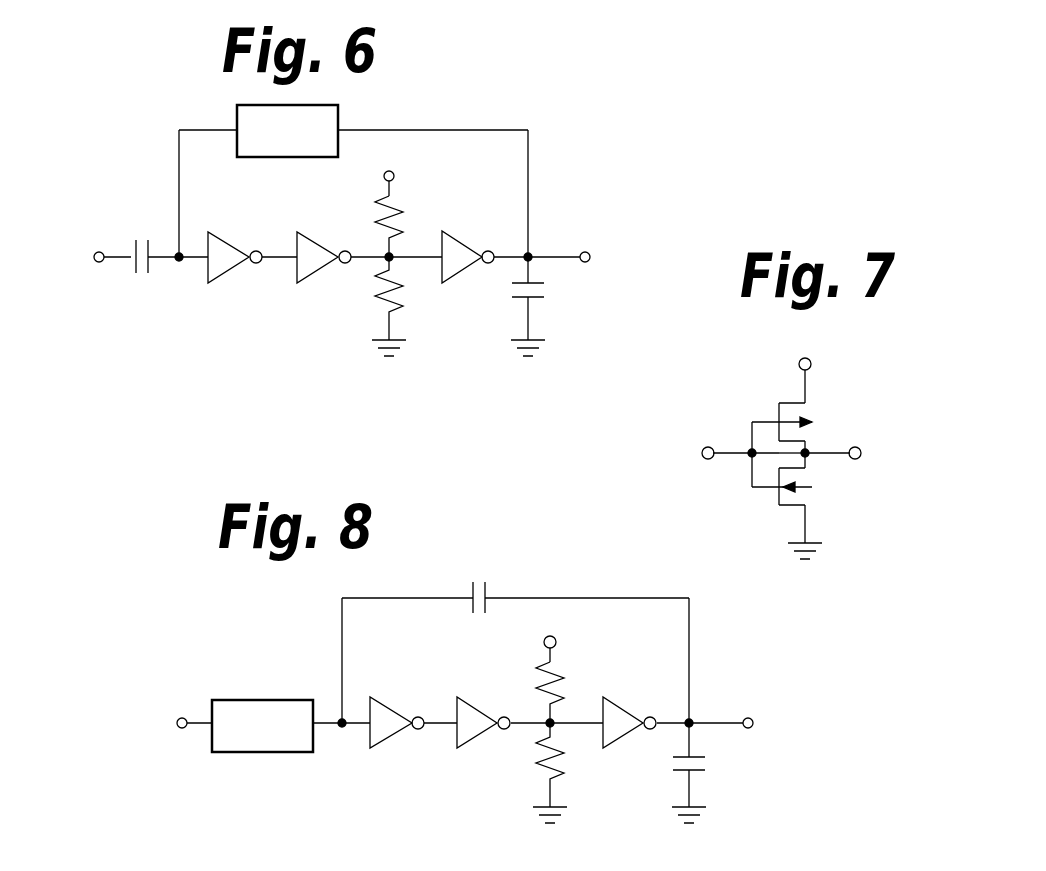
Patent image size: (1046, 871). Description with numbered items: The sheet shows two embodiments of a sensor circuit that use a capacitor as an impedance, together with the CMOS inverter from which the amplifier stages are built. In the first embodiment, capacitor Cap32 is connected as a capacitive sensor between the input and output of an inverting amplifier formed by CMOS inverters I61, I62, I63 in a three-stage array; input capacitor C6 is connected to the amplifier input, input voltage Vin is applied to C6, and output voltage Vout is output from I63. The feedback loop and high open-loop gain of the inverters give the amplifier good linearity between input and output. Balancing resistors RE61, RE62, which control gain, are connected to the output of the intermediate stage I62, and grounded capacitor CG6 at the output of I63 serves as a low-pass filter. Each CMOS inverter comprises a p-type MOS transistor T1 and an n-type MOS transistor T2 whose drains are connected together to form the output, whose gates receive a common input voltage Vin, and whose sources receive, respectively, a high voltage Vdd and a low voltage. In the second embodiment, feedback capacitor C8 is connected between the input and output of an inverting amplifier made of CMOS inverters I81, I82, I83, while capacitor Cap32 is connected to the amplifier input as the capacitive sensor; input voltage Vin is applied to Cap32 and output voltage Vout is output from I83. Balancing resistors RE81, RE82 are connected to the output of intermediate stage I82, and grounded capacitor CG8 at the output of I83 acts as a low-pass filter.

In FIG. 6, the capacitor Cap32 is at (287, 131).
In FIG. 8, the capacitor Cap32 is at (262, 726).
In FIG. 6, the input capacitor C6 is at (140, 244).
In FIG. 6, the CMOS inverter I61 is at (235, 245).
In FIG. 6, the CMOS inverter I62 is at (324, 245).
In FIG. 6, the CMOS inverter I63 is at (468, 269).
In FIG. 6, the balancing resistor RE61 is at (418, 225).
In FIG. 6, the balancing resistor RE62 is at (363, 306).
In FIG. 6, the grounded capacitor CG6 is at (555, 306).
In FIG. 7, the p-type MOS transistor T1 is at (779, 403).
In FIG. 7, the n-type MOS transistor T2 is at (779, 503).
In FIG. 8, the feedback capacitor C8 is at (479, 585).
In FIG. 8, the CMOS inverter I81 is at (397, 709).
In FIG. 8, the CMOS inverter I82 is at (483, 710).
In FIG. 8, the CMOS inverter I83 is at (629, 736).
In FIG. 8, the balancing resistor RE81 is at (580, 691).
In FIG. 8, the balancing resistor RE82 is at (522, 773).
In FIG. 8, the grounded capacitor CG8 is at (715, 773).
In FIG. 6, the input voltage Vin is at (76, 257).
In FIG. 7, the input voltage Vin is at (686, 453).
In FIG. 8, the input voltage Vin is at (158, 723).
In FIG. 6, the output voltage Vout is at (613, 257).
In FIG. 7, the output voltage Vout is at (882, 453).
In FIG. 8, the output voltage Vout is at (776, 723).
In FIG. 6, the supply voltage terminal Vdd is at (387, 169).
In FIG. 7, the supply voltage terminal Vdd is at (802, 351).
In FIG. 8, the supply voltage terminal Vdd is at (547, 635).